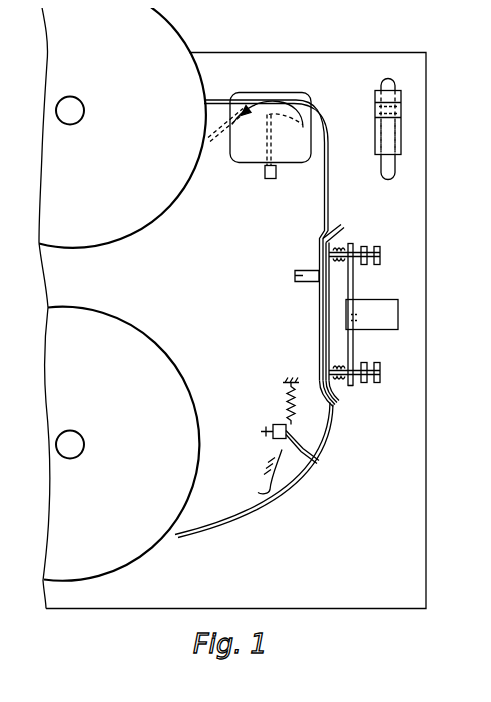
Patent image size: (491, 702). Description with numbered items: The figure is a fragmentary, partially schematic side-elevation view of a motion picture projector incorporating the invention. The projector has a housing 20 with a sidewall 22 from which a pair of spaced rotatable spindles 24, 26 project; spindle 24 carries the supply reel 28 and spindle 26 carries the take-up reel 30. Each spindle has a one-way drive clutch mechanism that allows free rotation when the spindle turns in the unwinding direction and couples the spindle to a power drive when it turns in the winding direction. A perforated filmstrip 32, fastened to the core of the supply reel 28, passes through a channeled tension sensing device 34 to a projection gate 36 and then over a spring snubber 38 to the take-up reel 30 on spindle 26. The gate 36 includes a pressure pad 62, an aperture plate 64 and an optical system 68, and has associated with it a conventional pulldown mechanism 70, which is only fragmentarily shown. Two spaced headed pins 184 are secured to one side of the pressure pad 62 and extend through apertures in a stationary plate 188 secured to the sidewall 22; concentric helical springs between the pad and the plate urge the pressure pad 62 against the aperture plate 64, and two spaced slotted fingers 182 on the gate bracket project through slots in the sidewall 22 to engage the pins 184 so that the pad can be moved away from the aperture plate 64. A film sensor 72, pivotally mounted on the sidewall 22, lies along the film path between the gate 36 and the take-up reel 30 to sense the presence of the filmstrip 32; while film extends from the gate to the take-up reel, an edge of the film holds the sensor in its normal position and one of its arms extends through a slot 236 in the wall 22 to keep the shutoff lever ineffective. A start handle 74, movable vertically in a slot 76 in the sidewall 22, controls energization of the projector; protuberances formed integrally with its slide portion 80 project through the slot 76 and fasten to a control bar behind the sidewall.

The motion picture projector housing 20 is at (314, 50).
The sidewall 22 is at (380, 57).
The spindle 24 is at (81, 108).
The spindle 26 is at (74, 437).
The supply reel 28 is at (142, 208).
The take-up reel 30 is at (144, 346).
The perforated filmstrip 32 is at (327, 171).
The channeled tension sensing device 34 is at (284, 91).
The projection gate 36 is at (315, 303).
The spring snubber 38 is at (265, 479).
The pressure pad 62 is at (326, 338).
The aperture plate 64 is at (318, 343).
The optical system 68 is at (373, 298).
The pulldown mechanism 70 is at (299, 268).
The film sensor 72 is at (318, 460).
The start handle 74 is at (398, 113).
The slot 76 is at (392, 165).
The slide portion 80 is at (395, 135).
The slotted fingers 182 is at (365, 378).
The headed pins 184 is at (378, 365).
The stationary plate 188 is at (348, 387).
The slot 236 is at (266, 428).